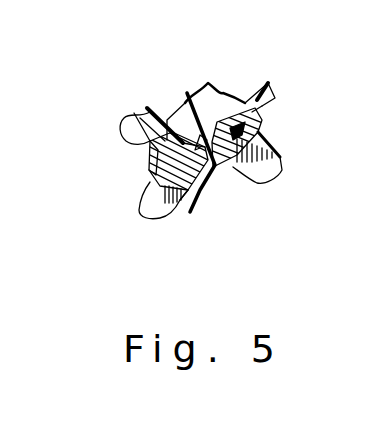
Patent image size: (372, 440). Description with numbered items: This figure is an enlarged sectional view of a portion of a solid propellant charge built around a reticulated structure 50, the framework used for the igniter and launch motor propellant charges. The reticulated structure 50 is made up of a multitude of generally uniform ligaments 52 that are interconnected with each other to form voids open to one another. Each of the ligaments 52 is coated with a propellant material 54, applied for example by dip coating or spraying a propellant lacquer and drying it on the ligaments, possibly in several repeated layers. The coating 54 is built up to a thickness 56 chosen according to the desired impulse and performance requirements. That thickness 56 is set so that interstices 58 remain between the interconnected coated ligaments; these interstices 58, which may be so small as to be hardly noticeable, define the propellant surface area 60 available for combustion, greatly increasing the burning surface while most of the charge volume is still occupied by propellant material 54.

The reticulated structure 50 is at (165, 101).
The ligaments 52 is at (150, 163).
The propellant material 54 is at (152, 113).
The thickness 56 is at (157, 180).
The interstices 58 is at (205, 148).
The propellant surface area 60 is at (188, 227).